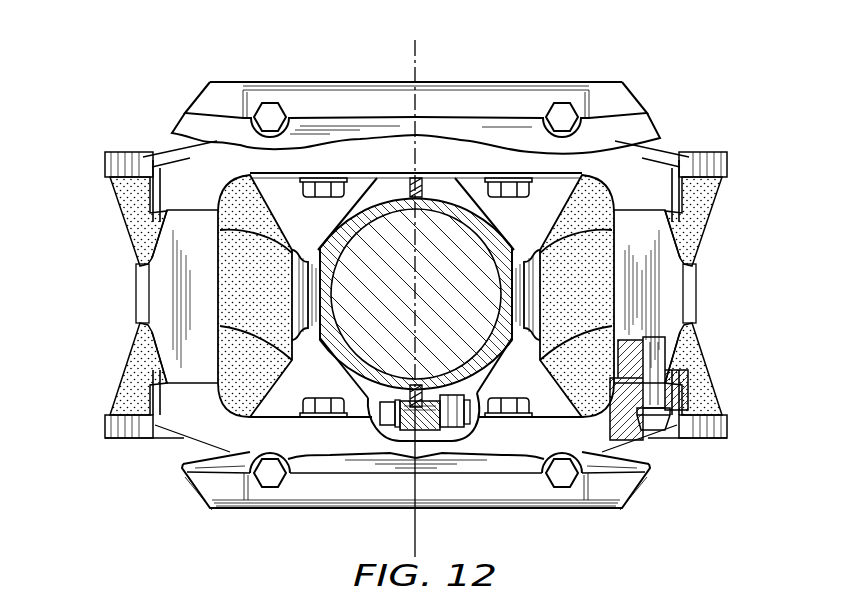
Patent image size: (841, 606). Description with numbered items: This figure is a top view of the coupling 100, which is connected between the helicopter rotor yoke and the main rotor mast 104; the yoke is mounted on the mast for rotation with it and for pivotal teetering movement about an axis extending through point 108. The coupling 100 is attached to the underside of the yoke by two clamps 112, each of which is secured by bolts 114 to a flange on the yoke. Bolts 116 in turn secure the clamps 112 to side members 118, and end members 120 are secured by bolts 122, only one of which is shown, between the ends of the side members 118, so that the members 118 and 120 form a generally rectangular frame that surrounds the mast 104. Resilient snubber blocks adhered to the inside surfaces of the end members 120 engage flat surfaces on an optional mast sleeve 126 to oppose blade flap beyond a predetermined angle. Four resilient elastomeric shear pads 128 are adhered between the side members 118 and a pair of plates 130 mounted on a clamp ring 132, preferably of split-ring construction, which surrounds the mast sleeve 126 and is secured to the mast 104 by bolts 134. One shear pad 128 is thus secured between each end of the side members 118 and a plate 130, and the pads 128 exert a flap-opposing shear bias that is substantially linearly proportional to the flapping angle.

The coupling 100 is at (687, 129).
The main rotor mast 104 is at (398, 308).
The point on teetering axis 108 is at (413, 62).
The clamp 112 is at (425, 88).
The bolt 114 is at (266, 110).
The bolt 116 is at (327, 191).
The side member 118 is at (183, 180).
The end member 120 is at (180, 249).
The bolt 122 is at (243, 287).
The mast sleeve 126 is at (493, 352).
The resilient elastomeric shear pad 128 is at (110, 198).
The plate 130 is at (140, 290).
The clamp ring 132 is at (471, 410).
The bolt 134 is at (380, 415).